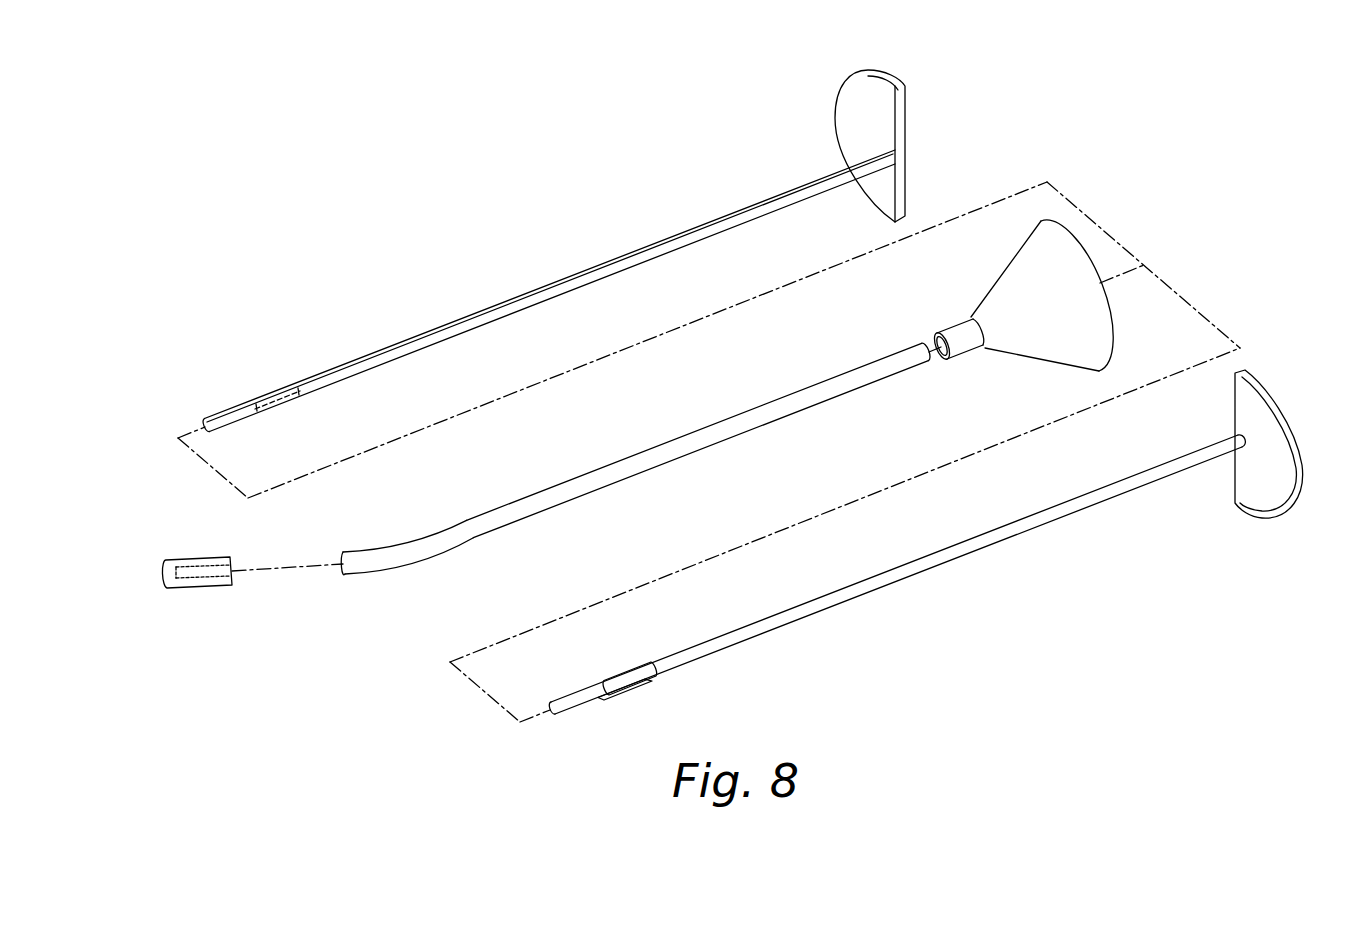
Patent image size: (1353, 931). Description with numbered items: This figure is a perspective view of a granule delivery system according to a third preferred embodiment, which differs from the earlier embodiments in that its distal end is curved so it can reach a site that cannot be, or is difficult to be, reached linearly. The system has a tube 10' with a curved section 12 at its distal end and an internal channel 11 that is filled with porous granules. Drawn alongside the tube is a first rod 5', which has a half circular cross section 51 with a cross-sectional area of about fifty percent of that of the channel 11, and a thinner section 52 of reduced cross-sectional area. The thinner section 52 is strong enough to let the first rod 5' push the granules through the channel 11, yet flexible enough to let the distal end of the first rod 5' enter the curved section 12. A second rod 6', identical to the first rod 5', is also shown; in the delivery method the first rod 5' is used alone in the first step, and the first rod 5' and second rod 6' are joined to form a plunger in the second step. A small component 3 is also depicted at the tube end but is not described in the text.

The tip 3 is at (192, 567).
The first rod 5' is at (554, 251).
The half circular cross section 51 is at (693, 228).
The thinner section 52 is at (278, 392).
The second rod 6' is at (925, 542).
The tube 10' is at (698, 452).
The channel 11 is at (342, 566).
The curved section 12 is at (402, 560).